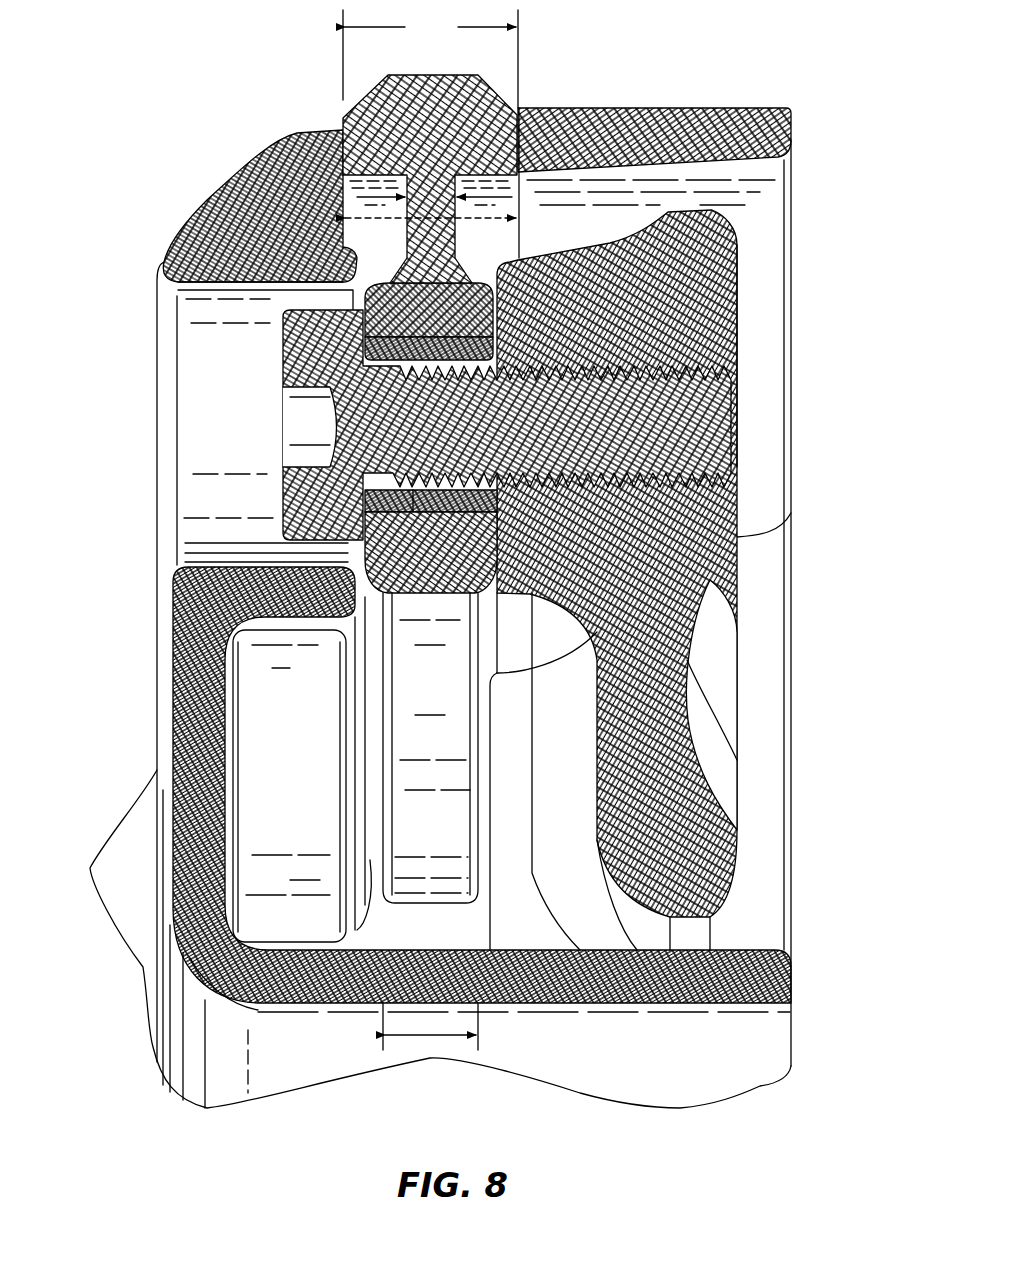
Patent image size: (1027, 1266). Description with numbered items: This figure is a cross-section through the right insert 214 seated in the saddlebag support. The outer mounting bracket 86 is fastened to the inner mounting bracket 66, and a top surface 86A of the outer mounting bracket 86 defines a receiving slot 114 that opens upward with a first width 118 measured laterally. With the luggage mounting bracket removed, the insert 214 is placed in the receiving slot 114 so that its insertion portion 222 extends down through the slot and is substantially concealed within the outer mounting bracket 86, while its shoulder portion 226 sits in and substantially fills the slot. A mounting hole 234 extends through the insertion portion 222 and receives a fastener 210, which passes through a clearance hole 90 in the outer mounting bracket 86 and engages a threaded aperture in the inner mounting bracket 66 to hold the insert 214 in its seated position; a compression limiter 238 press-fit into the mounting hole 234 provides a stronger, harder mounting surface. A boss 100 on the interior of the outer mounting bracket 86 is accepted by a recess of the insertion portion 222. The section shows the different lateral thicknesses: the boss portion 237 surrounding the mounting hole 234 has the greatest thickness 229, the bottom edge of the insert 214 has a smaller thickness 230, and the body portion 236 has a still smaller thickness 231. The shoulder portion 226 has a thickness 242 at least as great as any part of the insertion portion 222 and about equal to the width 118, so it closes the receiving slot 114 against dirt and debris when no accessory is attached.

The inner mounting bracket 66 is at (697, 267).
The outer mounting bracket 86 is at (212, 195).
The top surface 86A is at (669, 549).
The clearance hole 90 is at (287, 284).
The boss 100 is at (345, 958).
The receiving slot 114 is at (365, 145).
The first width 118 is at (472, 218).
The fastener 210 is at (284, 354).
The insert 214 is at (395, 300).
The insertion portion 222 is at (420, 798).
The shoulder portion 226 is at (518, 108).
The thickness of the boss portion 229 is at (493, 308).
The bottom edge thickness 230 is at (430, 1040).
The body portion thickness 231 is at (490, 198).
The mounting hole 234 is at (405, 477).
The body portion 236 is at (405, 245).
The boss portion 237 is at (330, 260).
The compression limiter 238 is at (500, 338).
The thickness of the shoulder portion 242 is at (430, 59).